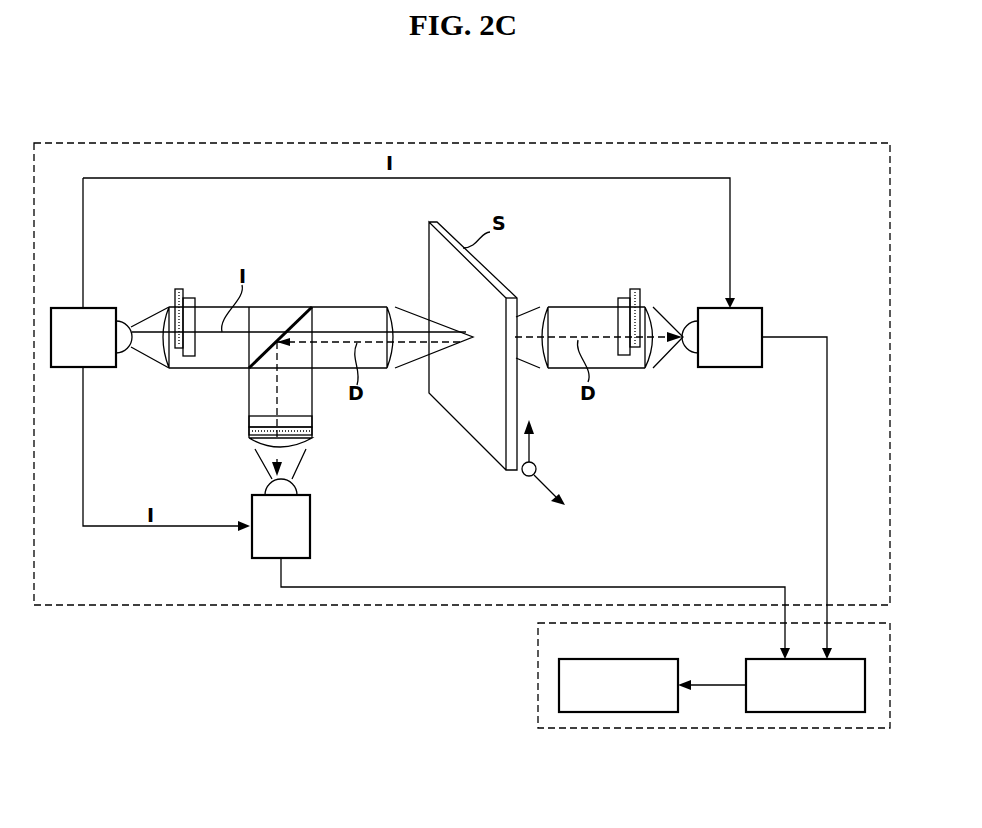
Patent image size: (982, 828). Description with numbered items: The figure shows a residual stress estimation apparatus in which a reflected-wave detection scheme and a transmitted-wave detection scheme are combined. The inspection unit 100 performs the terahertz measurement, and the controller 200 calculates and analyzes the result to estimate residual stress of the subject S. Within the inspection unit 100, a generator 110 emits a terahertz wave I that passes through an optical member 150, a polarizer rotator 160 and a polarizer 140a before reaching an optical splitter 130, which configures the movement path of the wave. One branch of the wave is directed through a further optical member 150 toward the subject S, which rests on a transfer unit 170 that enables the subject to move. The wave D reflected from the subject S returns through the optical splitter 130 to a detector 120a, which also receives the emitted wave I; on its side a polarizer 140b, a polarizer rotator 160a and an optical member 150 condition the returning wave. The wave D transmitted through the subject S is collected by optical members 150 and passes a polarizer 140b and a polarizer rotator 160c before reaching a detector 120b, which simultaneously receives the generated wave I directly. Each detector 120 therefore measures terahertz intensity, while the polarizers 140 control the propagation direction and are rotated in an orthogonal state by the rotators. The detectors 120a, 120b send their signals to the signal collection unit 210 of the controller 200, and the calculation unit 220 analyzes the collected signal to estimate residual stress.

The inspection unit 100 is at (392, 143).
The generator 110 is at (58, 308).
The detector 120 is at (518, 433).
The detector 120a is at (312, 526).
The detector 120b is at (727, 368).
The optical splitter 130 is at (295, 312).
The polarizer 140 is at (406, 326).
The polarizer 140a is at (188, 298).
The polarizer 140b is at (620, 298).
The optical member 150 is at (165, 310).
The polarizer rotator 160 is at (178, 352).
The polarizer rotator 160a is at (249, 430).
The polarizer rotator 160c is at (640, 290).
The transfer unit 170 is at (536, 469).
The controller 200 is at (538, 683).
The signal collection unit 210 is at (805, 712).
The calculation unit 220 is at (615, 712).